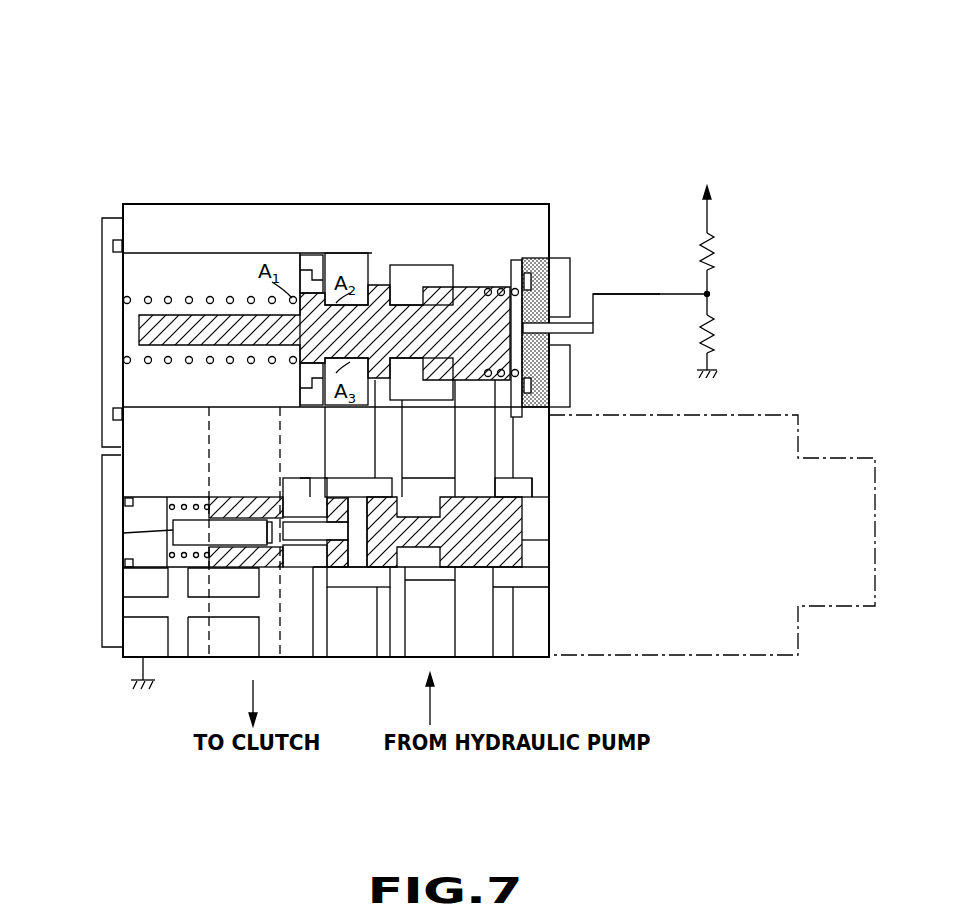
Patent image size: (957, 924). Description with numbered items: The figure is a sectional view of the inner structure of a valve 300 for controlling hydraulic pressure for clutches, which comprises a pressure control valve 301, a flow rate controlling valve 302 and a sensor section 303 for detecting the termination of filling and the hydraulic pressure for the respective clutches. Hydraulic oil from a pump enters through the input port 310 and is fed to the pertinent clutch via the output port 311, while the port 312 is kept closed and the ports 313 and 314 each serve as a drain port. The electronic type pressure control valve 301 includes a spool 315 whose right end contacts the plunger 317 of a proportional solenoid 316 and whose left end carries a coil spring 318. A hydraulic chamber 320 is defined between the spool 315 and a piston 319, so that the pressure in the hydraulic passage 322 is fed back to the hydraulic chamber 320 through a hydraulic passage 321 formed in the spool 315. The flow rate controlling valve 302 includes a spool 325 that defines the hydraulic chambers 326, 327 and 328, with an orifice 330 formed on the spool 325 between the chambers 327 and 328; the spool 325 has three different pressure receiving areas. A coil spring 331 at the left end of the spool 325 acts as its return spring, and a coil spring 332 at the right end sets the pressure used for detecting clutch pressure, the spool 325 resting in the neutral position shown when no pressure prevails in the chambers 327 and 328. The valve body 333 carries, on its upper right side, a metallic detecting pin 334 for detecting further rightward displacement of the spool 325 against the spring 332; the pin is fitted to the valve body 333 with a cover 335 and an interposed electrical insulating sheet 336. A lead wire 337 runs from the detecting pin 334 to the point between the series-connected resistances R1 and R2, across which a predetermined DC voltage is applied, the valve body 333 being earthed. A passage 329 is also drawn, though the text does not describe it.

The valve 300 is at (560, 160).
The pressure control valve 301 is at (425, 496).
The flow rate controlling valve 302 is at (476, 218).
The sensor section 303 is at (645, 262).
The input port 310 is at (438, 647).
The output port 311 is at (227, 647).
The port 312 is at (363, 647).
The drain port 313 is at (503, 647).
The drain port 314 is at (305, 647).
The spool 315 is at (522, 555).
The proportional solenoid 316 is at (752, 655).
The plunger 317 is at (537, 523).
The coil spring 318 is at (182, 503).
The piston 319 is at (123, 533).
The hydraulic chamber 320 is at (264, 520).
The hydraulic passage 321 is at (303, 533).
The hydraulic passage 322 is at (340, 437).
The spool 325 is at (382, 283).
The hydraulic chamber 326 is at (433, 267).
The hydraulic chamber 327 is at (347, 253).
The hydraulic chamber 328 is at (218, 258).
The passage 329 is at (443, 413).
The orifice 330 is at (302, 256).
The coil spring 331 is at (124, 297).
The coil spring 332 is at (503, 275).
The valve body 333 is at (160, 205).
The detecting pin 334 is at (595, 330).
The cover 335 is at (571, 283).
The electrical insulating sheet 336 is at (550, 378).
The lead wire 337 is at (655, 297).
The resistance R1 is at (723, 251).
The resistance R2 is at (723, 334).